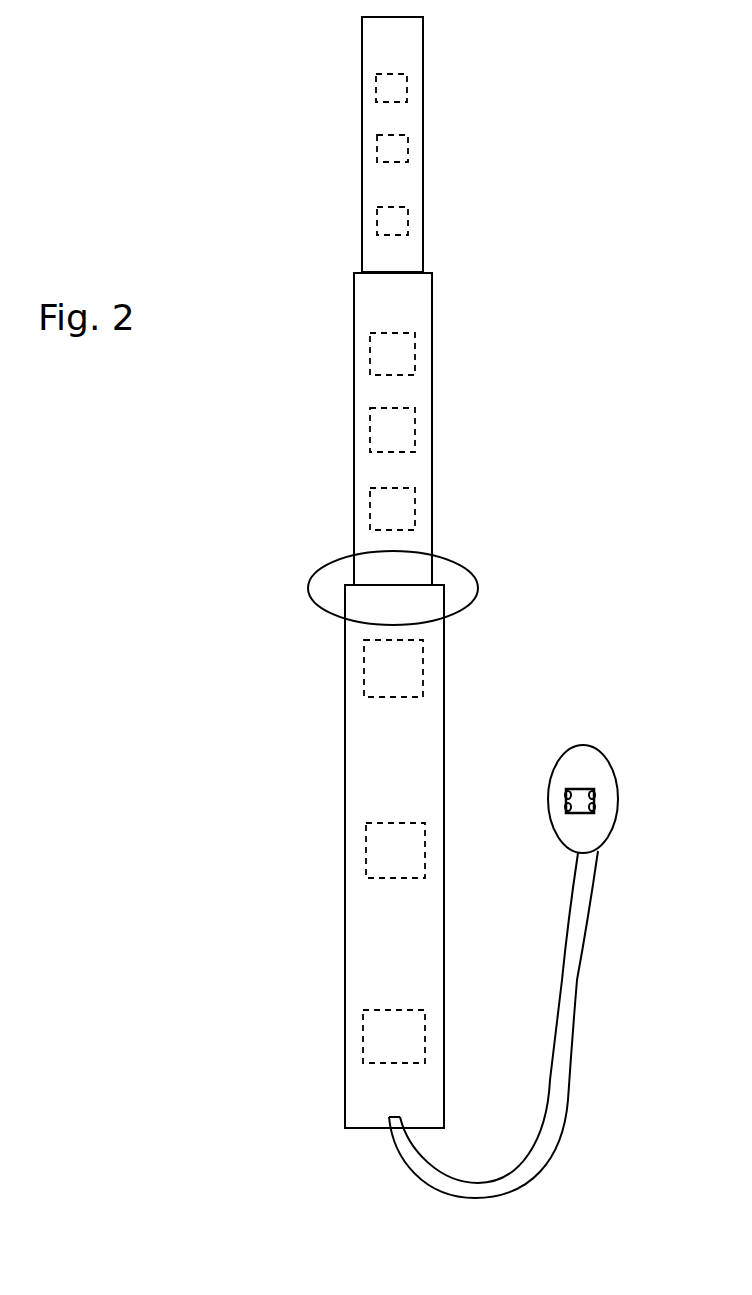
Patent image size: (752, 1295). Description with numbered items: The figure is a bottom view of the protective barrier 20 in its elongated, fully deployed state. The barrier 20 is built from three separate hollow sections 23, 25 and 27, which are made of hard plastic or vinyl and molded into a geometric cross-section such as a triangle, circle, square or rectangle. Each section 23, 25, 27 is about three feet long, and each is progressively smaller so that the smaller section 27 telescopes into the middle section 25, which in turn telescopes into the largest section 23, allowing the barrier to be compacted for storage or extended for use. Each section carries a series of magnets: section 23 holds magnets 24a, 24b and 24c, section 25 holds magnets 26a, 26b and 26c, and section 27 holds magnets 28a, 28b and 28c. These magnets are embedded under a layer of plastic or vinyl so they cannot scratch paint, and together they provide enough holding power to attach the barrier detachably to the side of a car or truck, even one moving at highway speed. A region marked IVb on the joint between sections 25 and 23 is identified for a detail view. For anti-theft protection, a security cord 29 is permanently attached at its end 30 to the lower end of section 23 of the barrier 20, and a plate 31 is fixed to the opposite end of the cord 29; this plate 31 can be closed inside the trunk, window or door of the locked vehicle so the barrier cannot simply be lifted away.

The protective barrier 20 is at (258, 238).
The section 23 is at (345, 863).
The magnet 24a is at (425, 1035).
The magnet 24b is at (425, 858).
The magnet 24c is at (423, 672).
The section 25 is at (354, 433).
The magnet 26a is at (415, 518).
The magnet 26b is at (415, 434).
The magnet 26c is at (415, 358).
The section 27 is at (362, 162).
The magnet 28a is at (376, 88).
The magnet 28b is at (408, 148).
The magnet 28c is at (408, 222).
The security cord 29 is at (567, 1122).
The end 30 is at (382, 1128).
The plate 31 is at (620, 795).
The detail region IV b IVb is at (485, 590).